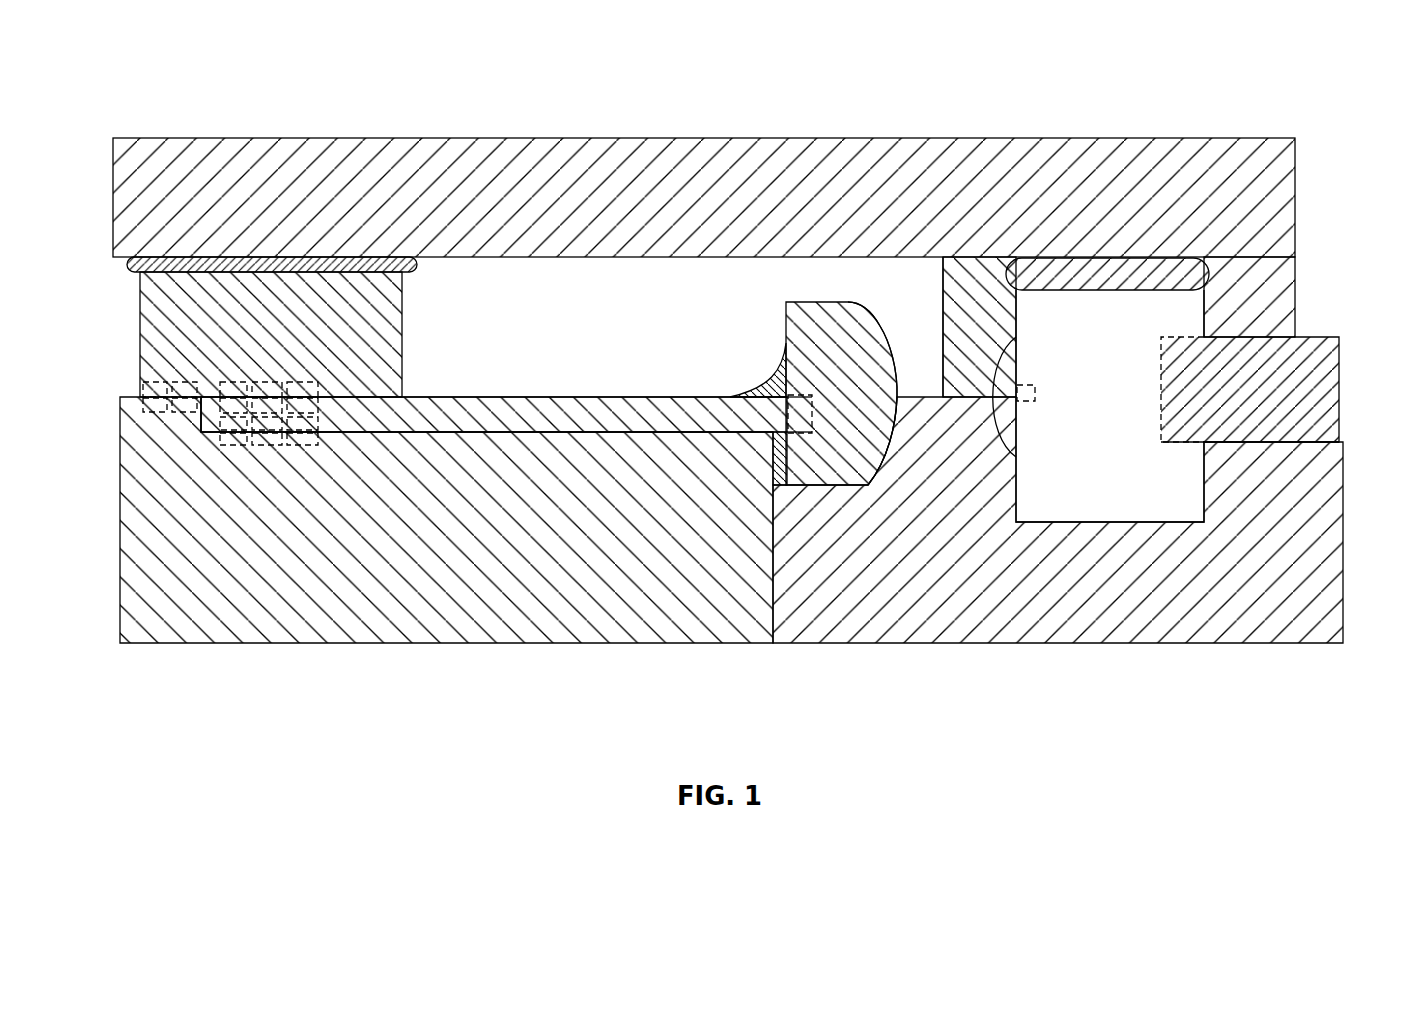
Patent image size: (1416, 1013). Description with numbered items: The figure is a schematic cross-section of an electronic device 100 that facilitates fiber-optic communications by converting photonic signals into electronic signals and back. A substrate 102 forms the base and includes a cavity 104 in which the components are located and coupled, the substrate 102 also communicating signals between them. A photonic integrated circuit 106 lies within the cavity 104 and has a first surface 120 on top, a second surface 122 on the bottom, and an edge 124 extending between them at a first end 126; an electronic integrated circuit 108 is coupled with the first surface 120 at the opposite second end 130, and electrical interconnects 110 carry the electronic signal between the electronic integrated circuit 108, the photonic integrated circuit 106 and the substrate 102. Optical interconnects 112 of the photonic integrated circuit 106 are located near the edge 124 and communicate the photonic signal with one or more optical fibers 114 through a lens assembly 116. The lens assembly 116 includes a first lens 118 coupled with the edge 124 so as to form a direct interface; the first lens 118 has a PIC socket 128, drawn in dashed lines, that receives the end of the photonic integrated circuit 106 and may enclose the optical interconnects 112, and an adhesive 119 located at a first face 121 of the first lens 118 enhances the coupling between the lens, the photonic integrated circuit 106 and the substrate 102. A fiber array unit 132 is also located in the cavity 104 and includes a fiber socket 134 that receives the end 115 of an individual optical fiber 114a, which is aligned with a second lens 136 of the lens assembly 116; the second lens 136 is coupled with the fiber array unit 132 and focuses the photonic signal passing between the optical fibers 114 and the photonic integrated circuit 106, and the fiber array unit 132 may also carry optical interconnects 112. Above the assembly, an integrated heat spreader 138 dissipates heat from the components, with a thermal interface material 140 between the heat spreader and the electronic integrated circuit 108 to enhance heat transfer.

The electronic device 100 is at (143, 108).
The substrate 102 is at (207, 633).
The cavity 104 is at (980, 578).
The photonic integrated circuit 106 is at (548, 415).
The electronic integrated circuit 108 is at (153, 310).
The electrical interconnects 110 is at (140, 397).
The optical interconnects 112 is at (797, 392).
The optical fibers 114 is at (1252, 322).
The optical fiber 114a is at (1322, 340).
The end of the optical fiber 115 is at (1160, 365).
The lens assembly 116 is at (925, 277).
The first lens 118 is at (850, 355).
The adhesive 119 is at (777, 372).
The first surface 120 is at (543, 397).
The post 121 is at (777, 308).
The second surface 122 is at (603, 432).
The edge 124 is at (812, 415).
The first end 126 is at (758, 450).
The PIC socket 128 is at (798, 433).
The second end 130 is at (198, 437).
The fiber array unit 132 is at (1095, 462).
The fiber socket 134 is at (1178, 446).
The second lens 136 is at (1015, 353).
The integrated heat spreader 138 is at (290, 150).
The thermal interface material 140 is at (130, 260).